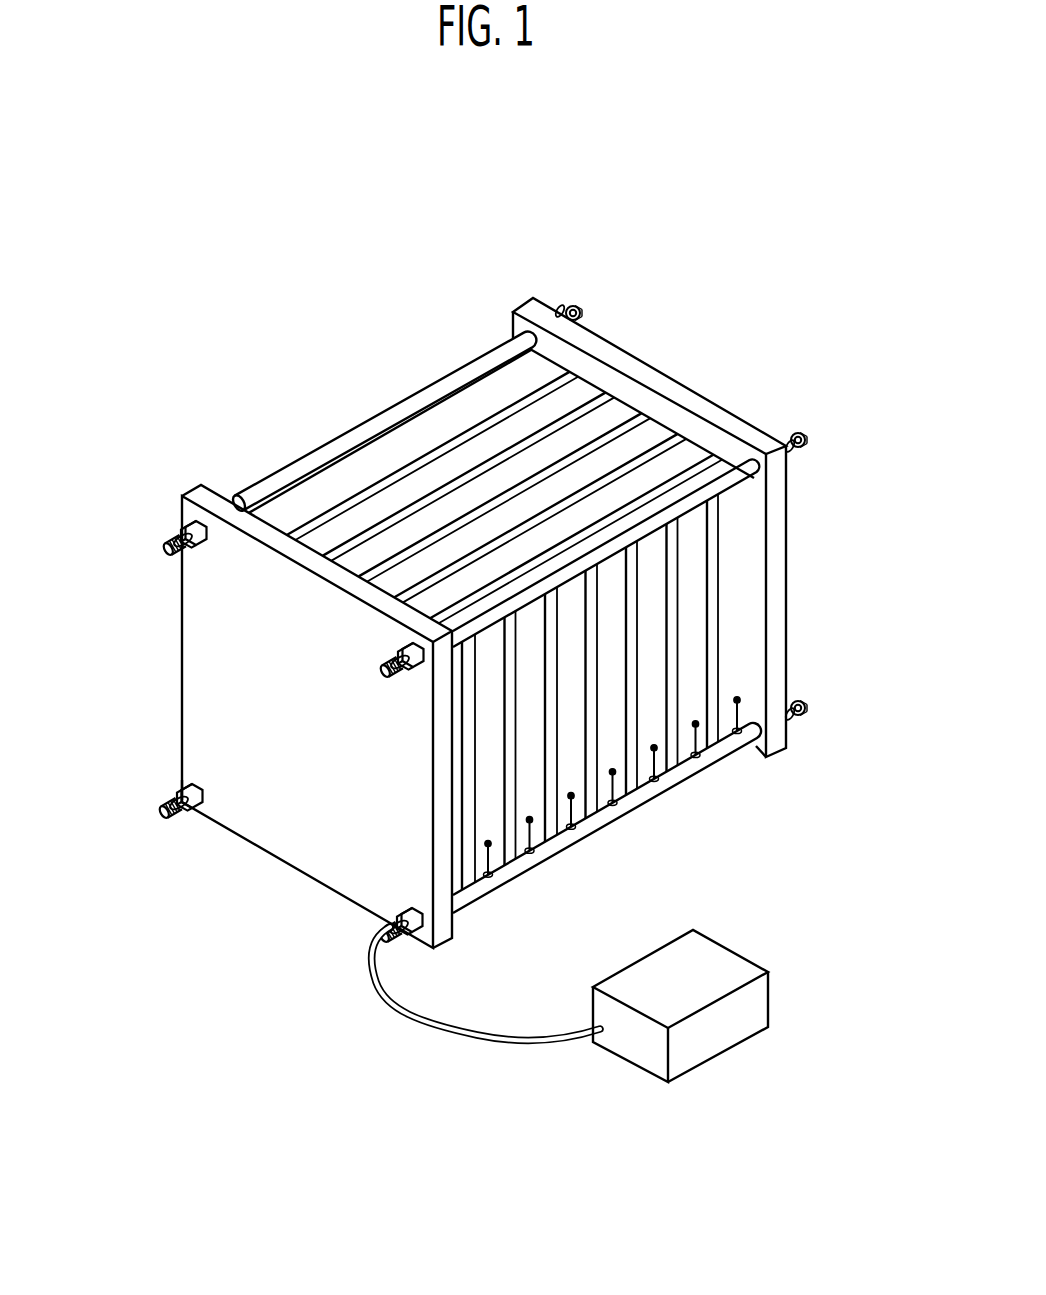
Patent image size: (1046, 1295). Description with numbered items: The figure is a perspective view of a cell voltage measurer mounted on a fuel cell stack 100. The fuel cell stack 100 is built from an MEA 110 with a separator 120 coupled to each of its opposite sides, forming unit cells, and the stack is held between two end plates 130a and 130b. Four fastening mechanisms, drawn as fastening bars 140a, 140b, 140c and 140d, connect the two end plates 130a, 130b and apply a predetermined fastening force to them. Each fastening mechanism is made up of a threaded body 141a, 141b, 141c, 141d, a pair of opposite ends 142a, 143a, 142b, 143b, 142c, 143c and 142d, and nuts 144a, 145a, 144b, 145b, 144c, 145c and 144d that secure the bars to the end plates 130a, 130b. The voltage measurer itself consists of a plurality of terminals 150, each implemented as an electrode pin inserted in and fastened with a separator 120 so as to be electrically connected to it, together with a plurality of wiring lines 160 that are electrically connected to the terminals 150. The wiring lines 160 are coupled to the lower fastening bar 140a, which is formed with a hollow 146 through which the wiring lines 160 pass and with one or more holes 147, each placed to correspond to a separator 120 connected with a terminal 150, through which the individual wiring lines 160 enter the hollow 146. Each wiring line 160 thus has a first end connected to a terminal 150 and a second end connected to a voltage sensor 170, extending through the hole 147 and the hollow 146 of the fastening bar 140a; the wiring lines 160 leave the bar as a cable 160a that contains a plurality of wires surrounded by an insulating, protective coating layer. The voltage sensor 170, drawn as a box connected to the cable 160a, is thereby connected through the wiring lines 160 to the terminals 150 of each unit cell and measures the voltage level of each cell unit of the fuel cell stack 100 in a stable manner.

The fuel cell stack 100 is at (650, 348).
The MEA 110 is at (372, 428).
The separator 120 is at (412, 432).
The end plate 130a is at (192, 487).
The end plate 130b is at (519, 300).
The fastening bar 140a is at (643, 818).
The fastening mechanism 140b is at (668, 501).
The fastening mechanism 140c is at (384, 422).
The fastening mechanism 140d is at (125, 824).
The threaded body 141a is at (710, 757).
The threaded body 141b is at (716, 487).
The threaded body 141c is at (315, 455).
The threaded body 141d is at (180, 797).
The end 142a is at (402, 947).
The end 142b is at (348, 635).
The end 142c is at (132, 510).
The end 142d is at (130, 771).
The end 143a is at (842, 697).
The end 143b is at (846, 409).
The end 143c is at (599, 274).
The nut 144a is at (428, 932).
The nut 144b is at (395, 648).
The nut 144c is at (178, 525).
The nut 144d is at (178, 790).
The nut 145a is at (806, 717).
The nut 145b is at (803, 447).
The nut 145c is at (562, 306).
The hollow 146 is at (382, 940).
The hole 147 is at (530, 860).
The terminal 150 is at (620, 810).
The wiring line 160 is at (672, 762).
The cable 160a is at (453, 1036).
The voltage sensor 170 is at (738, 945).